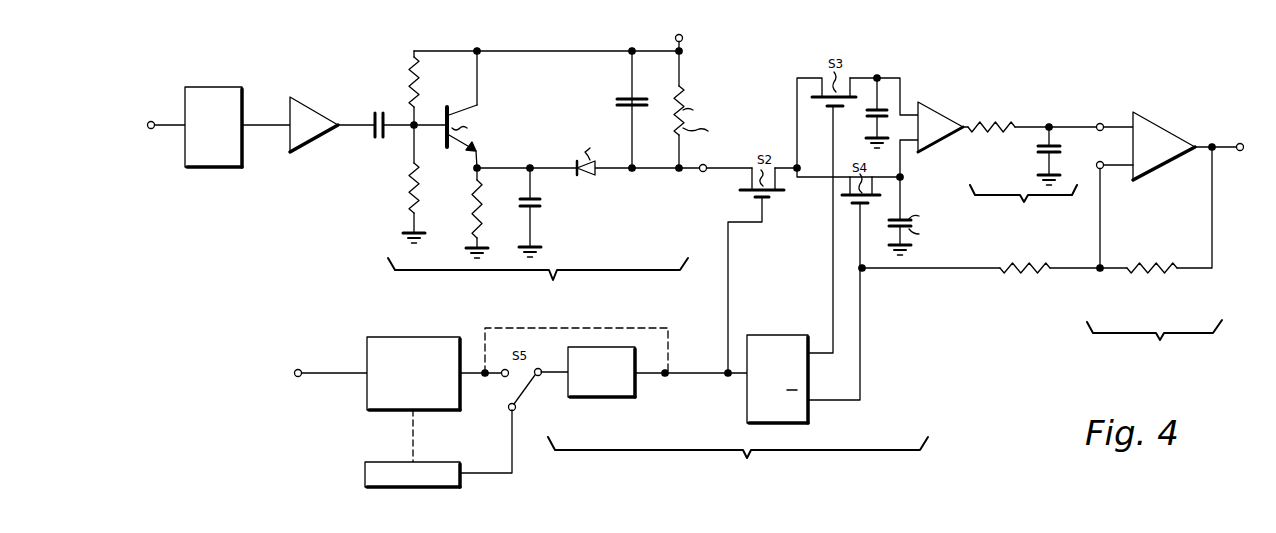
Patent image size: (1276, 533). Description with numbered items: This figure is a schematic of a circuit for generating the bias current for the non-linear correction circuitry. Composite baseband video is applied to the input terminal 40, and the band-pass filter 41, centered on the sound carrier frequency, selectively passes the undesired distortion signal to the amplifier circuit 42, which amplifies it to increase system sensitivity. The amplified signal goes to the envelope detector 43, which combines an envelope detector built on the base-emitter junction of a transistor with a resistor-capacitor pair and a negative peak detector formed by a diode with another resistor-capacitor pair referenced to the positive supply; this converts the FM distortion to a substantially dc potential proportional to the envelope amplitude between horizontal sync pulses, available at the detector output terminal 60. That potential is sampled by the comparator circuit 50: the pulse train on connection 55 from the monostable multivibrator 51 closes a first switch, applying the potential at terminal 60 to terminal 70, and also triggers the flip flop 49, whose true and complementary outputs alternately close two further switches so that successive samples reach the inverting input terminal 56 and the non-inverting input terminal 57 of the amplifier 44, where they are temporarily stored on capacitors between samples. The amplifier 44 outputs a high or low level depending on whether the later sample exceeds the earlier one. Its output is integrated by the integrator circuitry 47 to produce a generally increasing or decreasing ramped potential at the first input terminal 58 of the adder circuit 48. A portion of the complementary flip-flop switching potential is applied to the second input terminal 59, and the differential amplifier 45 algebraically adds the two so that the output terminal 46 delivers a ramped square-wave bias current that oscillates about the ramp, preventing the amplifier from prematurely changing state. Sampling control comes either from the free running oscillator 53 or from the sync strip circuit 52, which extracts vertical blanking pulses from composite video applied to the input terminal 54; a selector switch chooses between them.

The input terminal 40 is at (151, 121).
The band-pass filter 41 is at (242, 91).
The amplifier circuit 42 is at (310, 103).
The envelope detector 43 is at (612, 307).
The amplifier 44 is at (938, 107).
The differential amplifier 45 is at (1160, 118).
The output terminal 46 is at (1242, 143).
The integrator circuitry 47 is at (1115, 231).
The adder circuit 48 is at (1226, 371).
The flip flop 49 is at (747, 403).
The comparator circuit 50 is at (738, 407).
The monostable multivibrator 51 is at (627, 397).
The sync strip circuit 52 is at (460, 411).
The free running oscillator 53 is at (460, 462).
The input terminal 54 is at (300, 369).
The connection 55 is at (728, 337).
The inverting input terminal 56 is at (877, 75).
The non-inverting input terminal 57 is at (903, 177).
The first input terminal 58 is at (1101, 123).
The second input terminal 59 is at (1103, 271).
The detector output terminal 60 is at (714, 175).
The terminal 70 is at (795, 164).